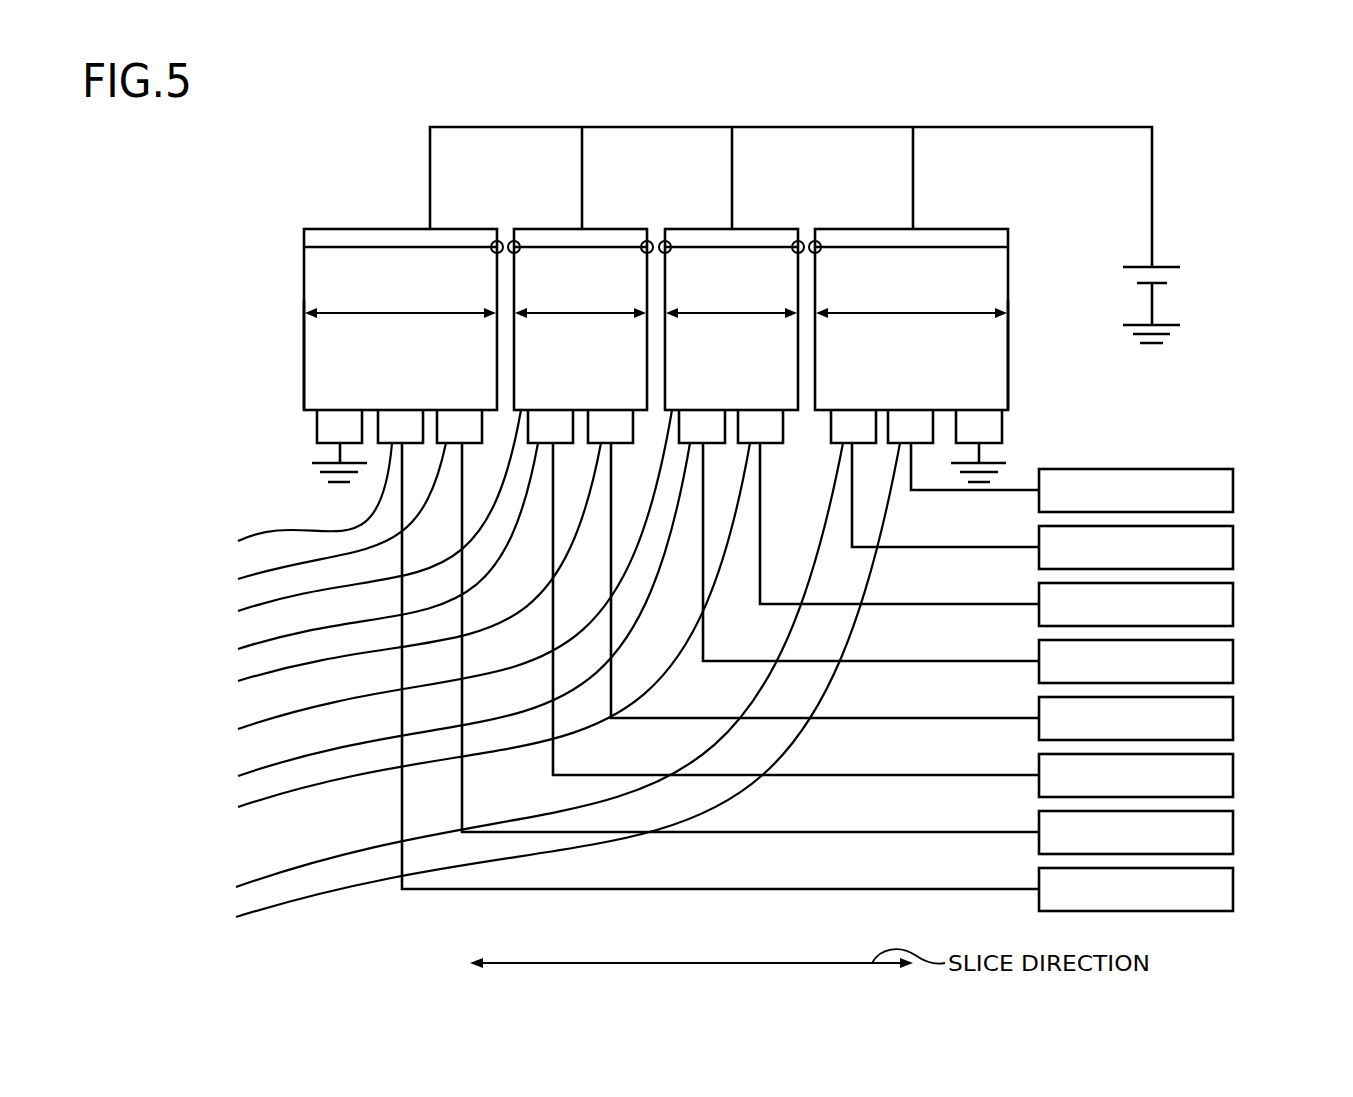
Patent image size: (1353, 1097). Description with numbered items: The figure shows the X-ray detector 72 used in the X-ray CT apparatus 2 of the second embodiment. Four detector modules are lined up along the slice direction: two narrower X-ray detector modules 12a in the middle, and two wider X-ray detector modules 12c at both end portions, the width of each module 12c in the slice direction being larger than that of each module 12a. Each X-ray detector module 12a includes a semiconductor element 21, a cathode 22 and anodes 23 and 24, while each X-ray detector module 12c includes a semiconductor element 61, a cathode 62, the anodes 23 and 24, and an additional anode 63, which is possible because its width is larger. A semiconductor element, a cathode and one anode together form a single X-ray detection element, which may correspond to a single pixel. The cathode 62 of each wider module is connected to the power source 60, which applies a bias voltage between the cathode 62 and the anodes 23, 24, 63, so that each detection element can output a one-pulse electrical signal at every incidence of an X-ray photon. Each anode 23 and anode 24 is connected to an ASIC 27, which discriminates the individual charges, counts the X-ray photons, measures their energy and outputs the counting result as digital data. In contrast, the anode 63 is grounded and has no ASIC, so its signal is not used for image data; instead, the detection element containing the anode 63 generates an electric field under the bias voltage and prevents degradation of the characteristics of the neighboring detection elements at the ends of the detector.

The X-ray CT apparatus 2 is at (1290, 96).
The X-ray detector 72 is at (1248, 164).
The power source 60 is at (1165, 266).
The X-ray detector module 12a is at (611, 208).
The X-ray detector module 12c is at (465, 209).
The cathode 62 is at (378, 229).
The cathode 22 is at (547, 229).
The semiconductor element 61 is at (304, 377).
The anode 63 is at (317, 421).
The semiconductor element 21 is at (409, 575).
The anode 23 is at (591, 654).
The anode 24 is at (591, 669).
The ASIC 27 is at (1277, 896).